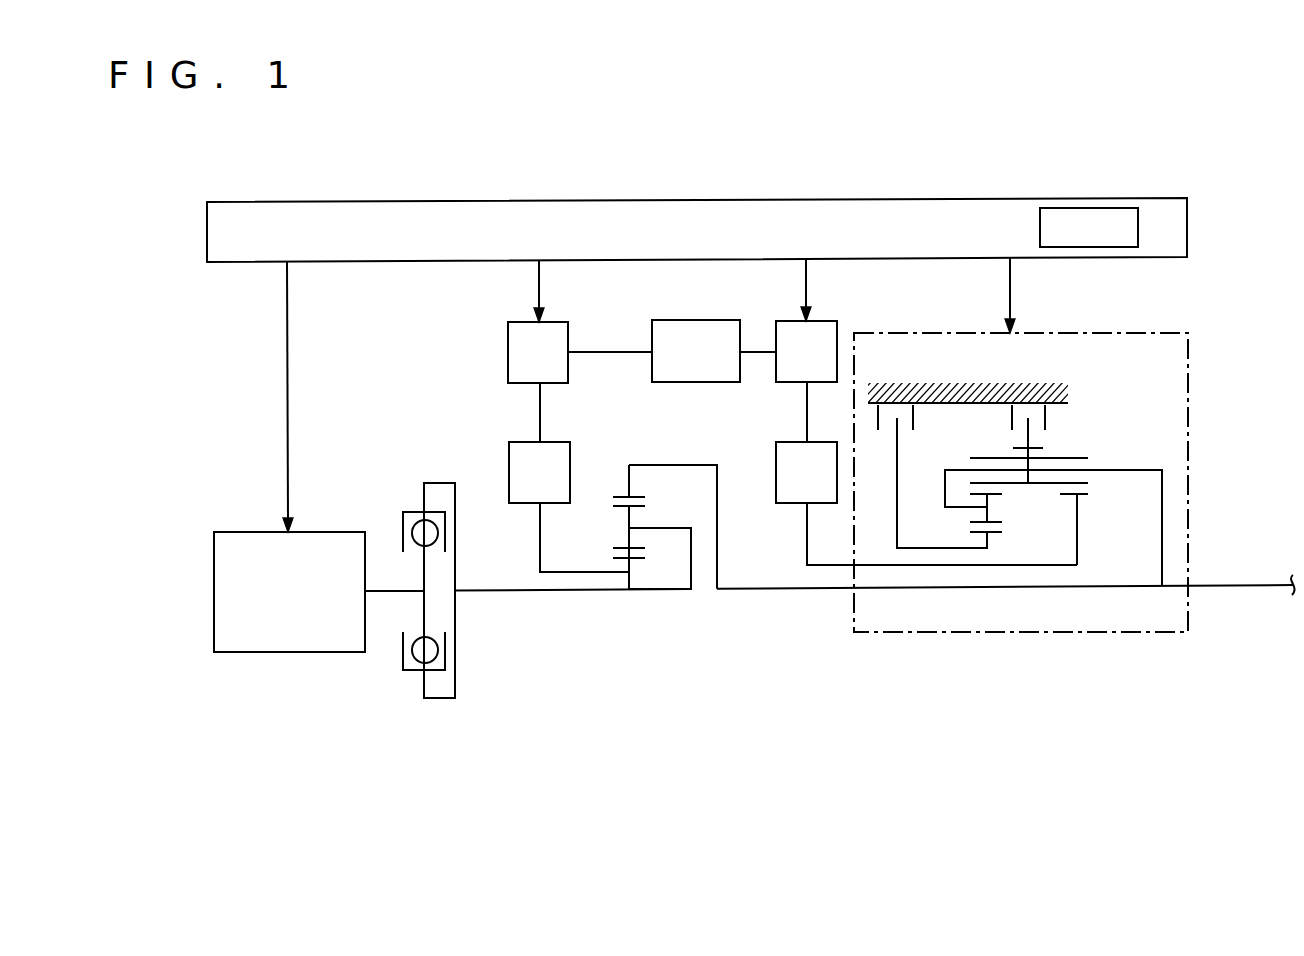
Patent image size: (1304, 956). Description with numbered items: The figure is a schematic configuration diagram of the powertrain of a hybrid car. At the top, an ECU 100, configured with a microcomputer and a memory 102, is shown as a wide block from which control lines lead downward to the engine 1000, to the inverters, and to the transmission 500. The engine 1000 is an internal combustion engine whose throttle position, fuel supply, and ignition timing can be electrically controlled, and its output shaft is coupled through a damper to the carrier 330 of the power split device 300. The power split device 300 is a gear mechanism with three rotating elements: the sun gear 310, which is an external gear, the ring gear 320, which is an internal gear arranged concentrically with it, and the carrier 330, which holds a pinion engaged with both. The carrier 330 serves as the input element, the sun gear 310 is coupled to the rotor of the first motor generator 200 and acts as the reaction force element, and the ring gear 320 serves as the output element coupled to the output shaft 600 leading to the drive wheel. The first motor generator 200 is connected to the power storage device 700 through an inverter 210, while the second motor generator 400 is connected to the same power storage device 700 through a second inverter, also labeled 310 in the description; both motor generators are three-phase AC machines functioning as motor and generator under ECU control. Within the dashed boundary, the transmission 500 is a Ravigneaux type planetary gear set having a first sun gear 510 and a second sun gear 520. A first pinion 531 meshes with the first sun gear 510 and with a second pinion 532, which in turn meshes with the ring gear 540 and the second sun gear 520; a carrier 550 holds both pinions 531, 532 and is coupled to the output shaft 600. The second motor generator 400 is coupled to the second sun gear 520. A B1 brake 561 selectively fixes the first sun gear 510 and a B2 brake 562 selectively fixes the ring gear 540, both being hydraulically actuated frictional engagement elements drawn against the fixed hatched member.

The ECU 100 is at (687, 198).
The memory 102 is at (1090, 208).
The first motor generator 200 is at (508, 457).
The inverter 210 is at (555, 321).
The power split device 300 is at (586, 550).
The sun gear 310 is at (818, 320).
The ring gear 320 is at (625, 495).
The carrier 330 is at (657, 518).
The second motor generator 400 is at (792, 503).
The transmission 500 is at (1187, 343).
The first sun gear 510 is at (994, 533).
The second sun gear 520 is at (1085, 495).
The first pinion 531 is at (993, 522).
The second pinion 532 is at (993, 456).
The ring gear 540 is at (1043, 448).
The carrier 550 is at (1123, 470).
The B1 brake 561 is at (907, 408).
The B2 brake 562 is at (1039, 408).
The output shaft 600 is at (1237, 588).
The power storage device 700 is at (693, 320).
The engine 1000 is at (305, 652).